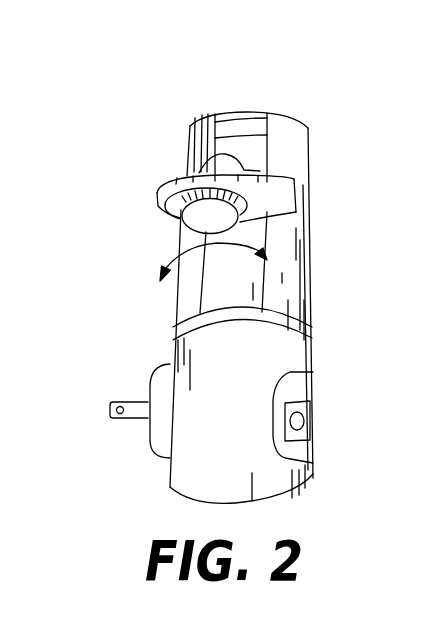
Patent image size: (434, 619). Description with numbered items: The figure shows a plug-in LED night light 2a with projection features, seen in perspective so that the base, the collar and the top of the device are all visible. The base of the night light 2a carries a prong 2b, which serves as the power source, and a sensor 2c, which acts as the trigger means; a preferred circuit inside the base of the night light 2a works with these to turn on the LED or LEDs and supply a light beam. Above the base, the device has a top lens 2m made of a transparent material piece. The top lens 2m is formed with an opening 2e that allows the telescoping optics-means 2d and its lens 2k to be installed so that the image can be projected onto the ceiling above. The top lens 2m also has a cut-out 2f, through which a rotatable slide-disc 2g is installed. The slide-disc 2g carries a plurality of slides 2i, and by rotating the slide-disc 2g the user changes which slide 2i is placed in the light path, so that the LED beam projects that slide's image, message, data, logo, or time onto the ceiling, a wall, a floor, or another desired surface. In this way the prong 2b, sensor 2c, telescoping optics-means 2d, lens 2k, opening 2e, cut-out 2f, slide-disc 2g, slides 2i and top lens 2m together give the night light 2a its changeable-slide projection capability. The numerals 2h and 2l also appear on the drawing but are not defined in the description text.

The plug-in LED night light 2a is at (200, 455).
The prong 2b is at (113, 417).
The sensor 2c is at (302, 421).
The telescoping optics-means 2d is at (250, 293).
The opening 2e is at (253, 113).
The cut-out 2f is at (213, 167).
The rotatable slide-disc 2g is at (168, 185).
The lens 2h is at (204, 207).
The slide 2i is at (240, 193).
The lens 2k is at (223, 113).
The slot 2l is at (253, 127).
The top lens 2m is at (187, 300).